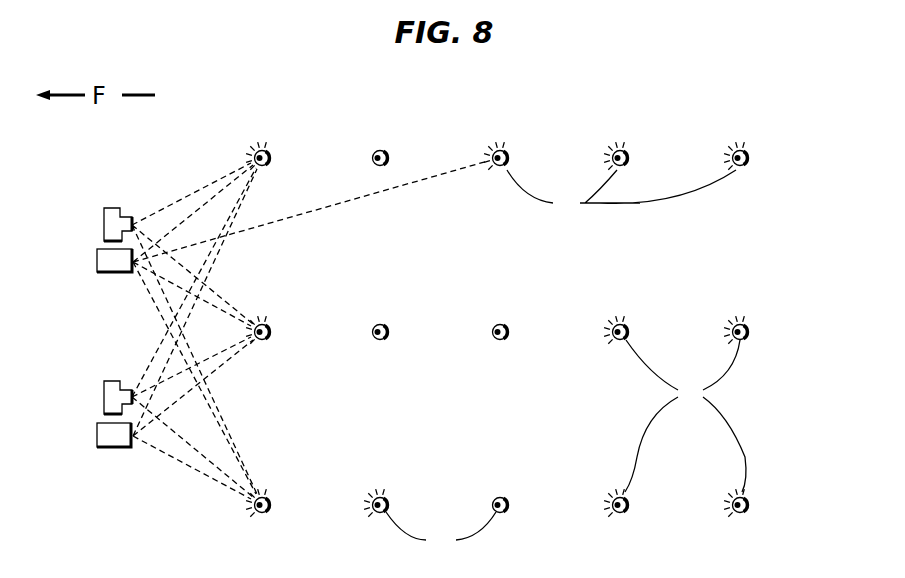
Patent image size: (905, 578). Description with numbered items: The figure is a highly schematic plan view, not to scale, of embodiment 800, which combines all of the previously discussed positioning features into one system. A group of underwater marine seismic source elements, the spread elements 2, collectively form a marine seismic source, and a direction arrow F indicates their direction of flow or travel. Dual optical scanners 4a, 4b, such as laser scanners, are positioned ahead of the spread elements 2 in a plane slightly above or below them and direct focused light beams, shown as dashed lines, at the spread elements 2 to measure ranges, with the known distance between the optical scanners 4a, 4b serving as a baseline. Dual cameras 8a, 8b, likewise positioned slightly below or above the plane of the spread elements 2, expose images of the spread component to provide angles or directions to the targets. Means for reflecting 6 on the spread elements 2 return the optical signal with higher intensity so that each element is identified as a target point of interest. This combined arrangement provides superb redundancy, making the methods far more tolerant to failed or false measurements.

The embodiment 800 is at (760, 99).
The camera 8a is at (112, 212).
The optical scanner 4a is at (97, 258).
The camera 8b is at (103, 392).
The optical scanner 4b is at (112, 440).
The means for reflection 6 is at (376, 150).
The spread element 2 is at (566, 364).